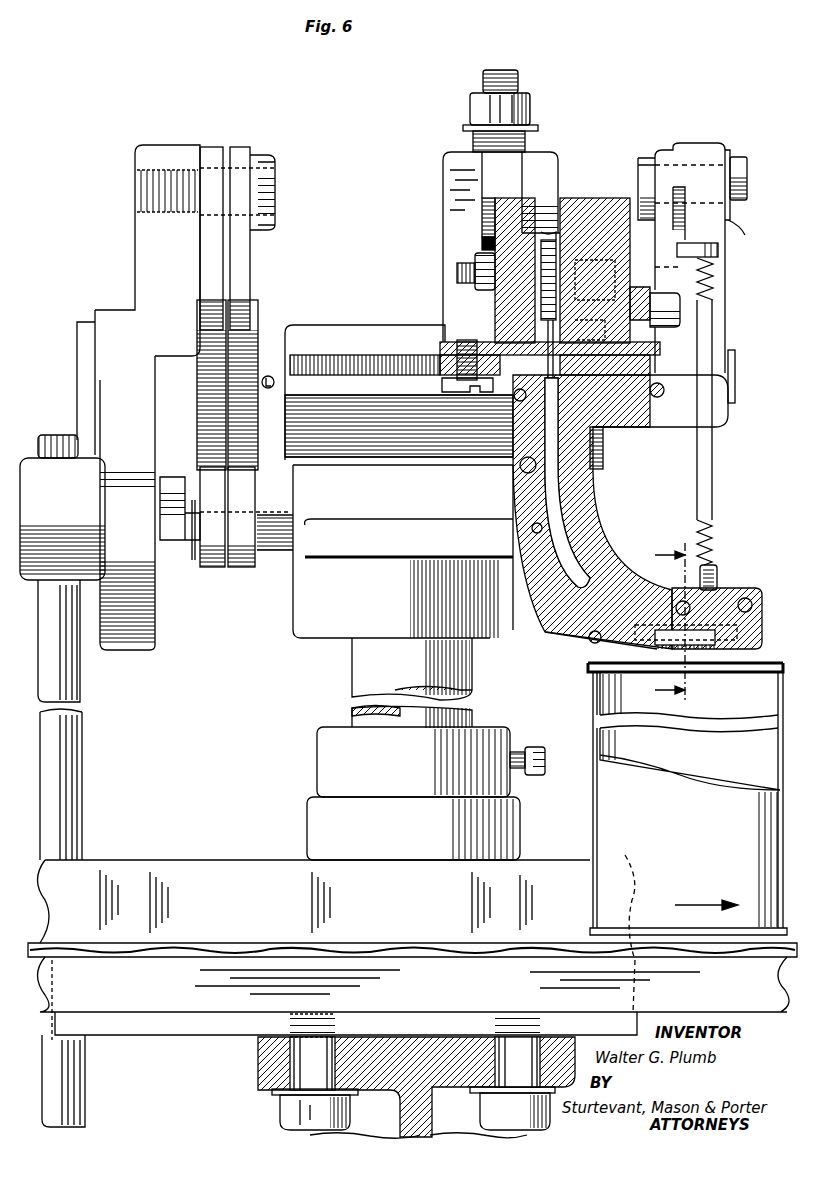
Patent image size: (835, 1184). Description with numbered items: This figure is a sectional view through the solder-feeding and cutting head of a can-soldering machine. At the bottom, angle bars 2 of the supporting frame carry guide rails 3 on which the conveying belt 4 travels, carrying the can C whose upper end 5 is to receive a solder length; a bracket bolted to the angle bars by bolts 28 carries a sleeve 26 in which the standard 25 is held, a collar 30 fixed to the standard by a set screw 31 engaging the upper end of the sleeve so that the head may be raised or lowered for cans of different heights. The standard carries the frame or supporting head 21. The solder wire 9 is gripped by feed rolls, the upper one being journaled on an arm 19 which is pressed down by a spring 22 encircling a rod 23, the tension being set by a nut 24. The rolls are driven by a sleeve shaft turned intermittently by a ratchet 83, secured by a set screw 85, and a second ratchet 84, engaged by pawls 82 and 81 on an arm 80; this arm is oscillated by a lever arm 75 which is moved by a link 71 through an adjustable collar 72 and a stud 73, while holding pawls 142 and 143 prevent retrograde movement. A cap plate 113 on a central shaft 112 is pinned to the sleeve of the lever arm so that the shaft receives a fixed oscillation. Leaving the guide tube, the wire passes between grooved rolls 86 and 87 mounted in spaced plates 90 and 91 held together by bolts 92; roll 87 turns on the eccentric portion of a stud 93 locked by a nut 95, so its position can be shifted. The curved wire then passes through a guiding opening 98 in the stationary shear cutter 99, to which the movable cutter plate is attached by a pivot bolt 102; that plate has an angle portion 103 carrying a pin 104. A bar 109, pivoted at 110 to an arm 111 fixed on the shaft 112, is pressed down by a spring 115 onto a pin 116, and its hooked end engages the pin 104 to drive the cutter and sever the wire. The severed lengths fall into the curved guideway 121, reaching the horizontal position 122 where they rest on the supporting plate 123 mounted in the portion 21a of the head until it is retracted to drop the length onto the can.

The angle bar 2 is at (138, 873).
The guide rail 3 is at (385, 975).
The conveying belt 4 is at (218, 946).
The upper end of the can 5 is at (600, 664).
The solder wire 9 is at (545, 316).
The arm 19 is at (445, 166).
The frame or supporting head 21 is at (347, 324).
The portion of the head 21a is at (542, 626).
The spring 22 is at (528, 137).
The rod 23 is at (500, 72).
The nut 24 is at (528, 107).
The standard 25 is at (360, 668).
The sleeve 26 is at (325, 817).
The bolt 28 is at (285, 1105).
The collar 30 is at (330, 751).
The set screw 31 is at (532, 746).
The link 71 is at (66, 745).
The adjustable collar 72 is at (24, 465).
The stud 73 is at (180, 533).
The lever arm 75 is at (140, 590).
The arm 80 is at (148, 236).
The pawl 81 is at (208, 148).
The pawl 82 is at (240, 148).
The ratchet 83 is at (240, 353).
The second ratchet 84 is at (207, 364).
The set screw 85 is at (276, 382).
The roll 86 is at (540, 300).
The roll 87 is at (485, 245).
The plate 90 is at (585, 205).
The plate 91 is at (523, 204).
The bolt 92 is at (487, 212).
The stud 93 is at (458, 270).
The locking nut 95 is at (483, 275).
The guiding opening 98 is at (523, 358).
The stationary shear cutter 99 is at (655, 347).
The pivot bolt 102 is at (455, 368).
The angle portion 103 is at (717, 290).
The pin 104 is at (682, 314).
The bar 109 is at (660, 152).
The pivot 110 is at (740, 165).
The arm 111 is at (720, 237).
The shaft 112 is at (736, 366).
The cap plate 113 is at (88, 353).
The spring 115 is at (718, 540).
The pin 116 is at (720, 262).
The guideway 121 is at (590, 567).
The horizontal position 122 is at (675, 620).
The supporting plate 123 is at (700, 655).
The holding pawl 142 is at (248, 568).
The holding pawl 143 is at (213, 568).
The can C is at (600, 792).